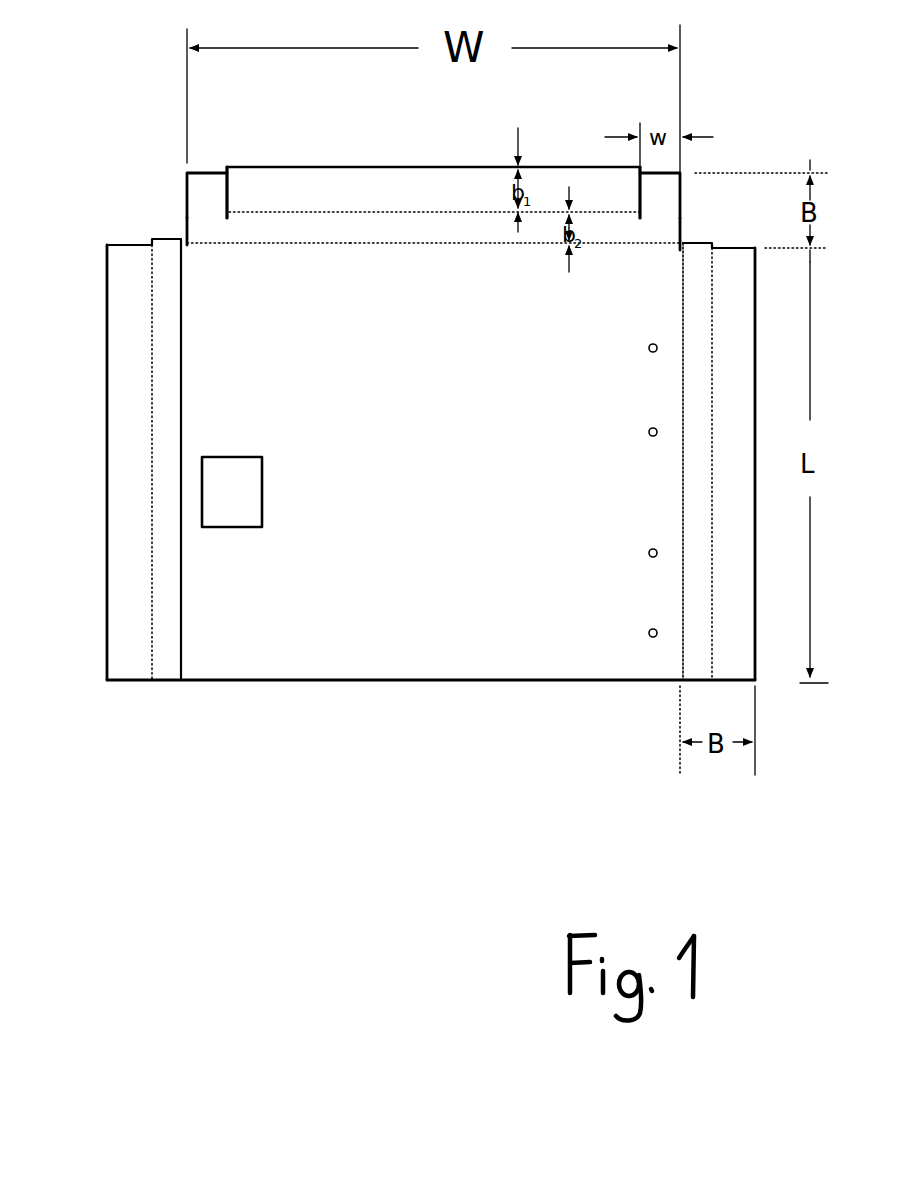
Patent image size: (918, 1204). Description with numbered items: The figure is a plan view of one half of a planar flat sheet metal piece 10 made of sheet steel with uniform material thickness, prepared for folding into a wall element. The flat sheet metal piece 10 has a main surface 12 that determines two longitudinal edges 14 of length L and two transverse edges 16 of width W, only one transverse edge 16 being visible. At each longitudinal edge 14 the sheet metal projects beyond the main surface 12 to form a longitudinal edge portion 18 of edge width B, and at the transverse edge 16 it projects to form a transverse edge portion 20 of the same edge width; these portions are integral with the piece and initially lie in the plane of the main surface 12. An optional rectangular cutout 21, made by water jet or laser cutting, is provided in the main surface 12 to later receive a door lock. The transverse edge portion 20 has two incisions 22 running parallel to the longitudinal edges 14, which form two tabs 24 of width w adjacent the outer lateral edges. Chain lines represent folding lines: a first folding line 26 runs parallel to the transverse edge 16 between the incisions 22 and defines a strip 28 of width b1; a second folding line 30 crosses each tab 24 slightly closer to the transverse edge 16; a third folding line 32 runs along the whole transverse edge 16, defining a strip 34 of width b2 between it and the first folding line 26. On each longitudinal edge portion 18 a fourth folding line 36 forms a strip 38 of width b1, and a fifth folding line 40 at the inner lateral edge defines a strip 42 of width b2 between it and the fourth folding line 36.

The flat sheet metal piece 10 is at (460, 757).
The main surface 12 is at (335, 652).
The longitudinal edge 14 is at (181, 593).
The transverse edge 16 is at (618, 250).
The longitudinal edge portion 18 is at (99, 549).
The transverse edge portion 20 is at (329, 161).
The rectangular cutout 21 is at (247, 491).
The incision 22 is at (233, 190).
The tab 24 is at (199, 195).
The first folding line 26 is at (375, 210).
The strip 28 is at (342, 182).
The second folding line 30 is at (202, 222).
The third folding line 32 is at (298, 242).
The strip 34 is at (437, 228).
The fourth folding line 36 is at (152, 362).
The strip 38 is at (127, 273).
The fifth folding line 40 is at (183, 420).
The strip 42 is at (166, 643).